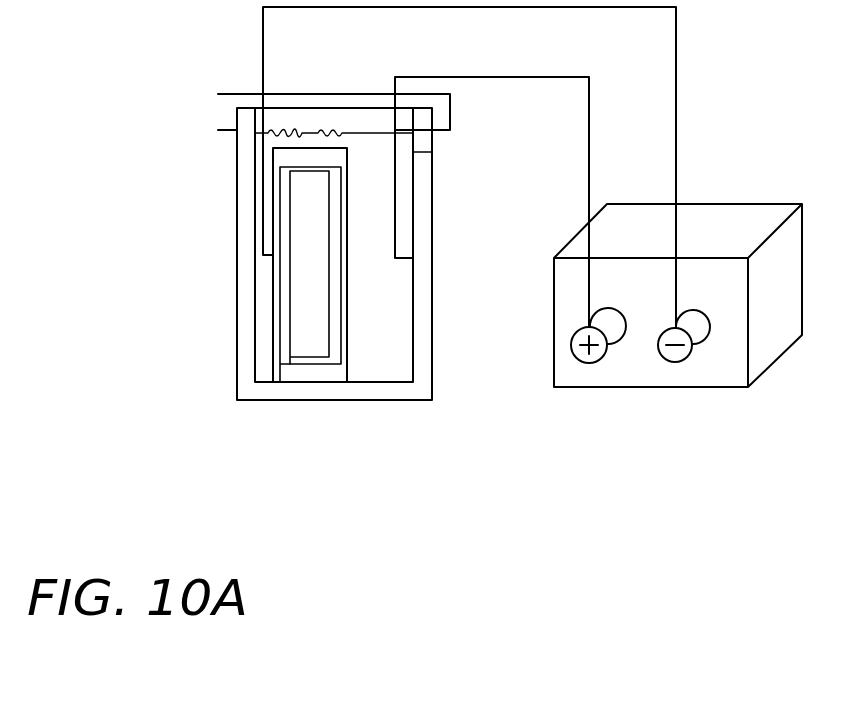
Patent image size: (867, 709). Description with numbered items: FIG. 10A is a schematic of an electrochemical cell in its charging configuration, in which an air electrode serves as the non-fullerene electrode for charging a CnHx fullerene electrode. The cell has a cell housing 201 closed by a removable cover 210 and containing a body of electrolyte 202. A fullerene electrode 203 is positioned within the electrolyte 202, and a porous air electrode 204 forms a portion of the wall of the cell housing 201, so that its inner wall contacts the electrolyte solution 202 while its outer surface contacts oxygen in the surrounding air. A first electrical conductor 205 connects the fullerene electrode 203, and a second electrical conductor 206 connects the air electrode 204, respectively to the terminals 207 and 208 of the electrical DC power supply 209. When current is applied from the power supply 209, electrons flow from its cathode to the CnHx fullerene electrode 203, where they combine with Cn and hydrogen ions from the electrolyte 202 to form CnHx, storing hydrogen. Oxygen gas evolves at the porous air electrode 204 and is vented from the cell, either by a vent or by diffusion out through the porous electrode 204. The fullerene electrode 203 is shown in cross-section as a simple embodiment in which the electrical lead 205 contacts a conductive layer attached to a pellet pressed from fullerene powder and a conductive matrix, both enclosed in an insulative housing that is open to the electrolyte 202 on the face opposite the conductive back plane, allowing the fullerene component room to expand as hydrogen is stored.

The cell housing 201 is at (242, 192).
The electrolyte 202 is at (382, 338).
The fullerene electrode 203 is at (278, 303).
The porous air electrode 204 is at (427, 318).
The first electrical conductor 205 is at (677, 82).
The second electrical conductor 206 is at (588, 170).
The terminal 207 is at (596, 362).
The terminal 208 is at (707, 393).
The electrical DC power supply 209 is at (775, 330).
The removable cover 210 is at (233, 97).